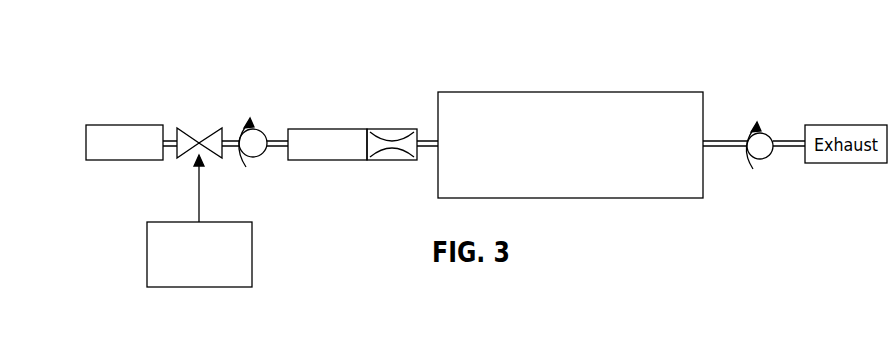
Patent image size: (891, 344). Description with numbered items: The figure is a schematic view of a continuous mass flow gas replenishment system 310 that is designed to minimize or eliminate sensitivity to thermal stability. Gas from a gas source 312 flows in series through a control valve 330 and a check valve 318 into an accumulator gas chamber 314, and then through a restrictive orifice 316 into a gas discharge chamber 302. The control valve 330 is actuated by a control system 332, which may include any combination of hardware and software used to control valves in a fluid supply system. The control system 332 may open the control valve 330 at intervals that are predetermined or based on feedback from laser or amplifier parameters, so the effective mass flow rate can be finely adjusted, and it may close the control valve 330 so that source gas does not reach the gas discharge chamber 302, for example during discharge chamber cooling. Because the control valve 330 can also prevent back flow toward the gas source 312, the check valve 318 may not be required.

The continuous mass flow gas replenishment system 310 is at (173, 57).
The gas source 312 is at (125, 124).
The control valve 330 is at (212, 127).
The check valve 318 is at (246, 120).
The accumulator gas chamber 314 is at (332, 126).
The restrictive orifice 316 is at (402, 124).
The gas discharge chamber 302 is at (523, 91).
The control system 332 is at (251, 265).